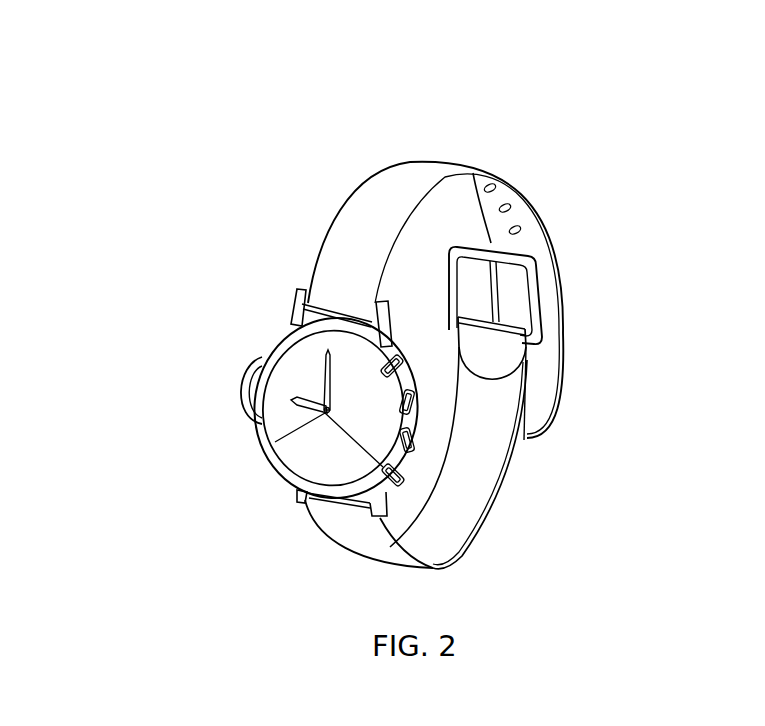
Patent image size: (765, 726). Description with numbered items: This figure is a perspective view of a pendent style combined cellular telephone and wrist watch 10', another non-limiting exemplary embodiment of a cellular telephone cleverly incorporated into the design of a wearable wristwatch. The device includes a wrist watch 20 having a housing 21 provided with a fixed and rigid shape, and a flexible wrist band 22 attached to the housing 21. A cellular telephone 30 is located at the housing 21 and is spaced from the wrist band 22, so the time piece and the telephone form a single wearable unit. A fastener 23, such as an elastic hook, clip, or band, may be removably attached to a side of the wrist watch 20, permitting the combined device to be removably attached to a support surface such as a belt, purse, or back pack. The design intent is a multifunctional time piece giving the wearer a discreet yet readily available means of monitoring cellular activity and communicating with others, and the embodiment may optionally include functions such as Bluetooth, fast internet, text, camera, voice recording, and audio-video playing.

The pendent style combined cellular telephone and wrist watch 10' is at (348, 287).
The wrist watch 20 is at (279, 303).
The housing 21 is at (264, 489).
The wrist band 22 is at (424, 168).
The fastener 23 is at (243, 403).
The cellular telephone 30 is at (440, 459).